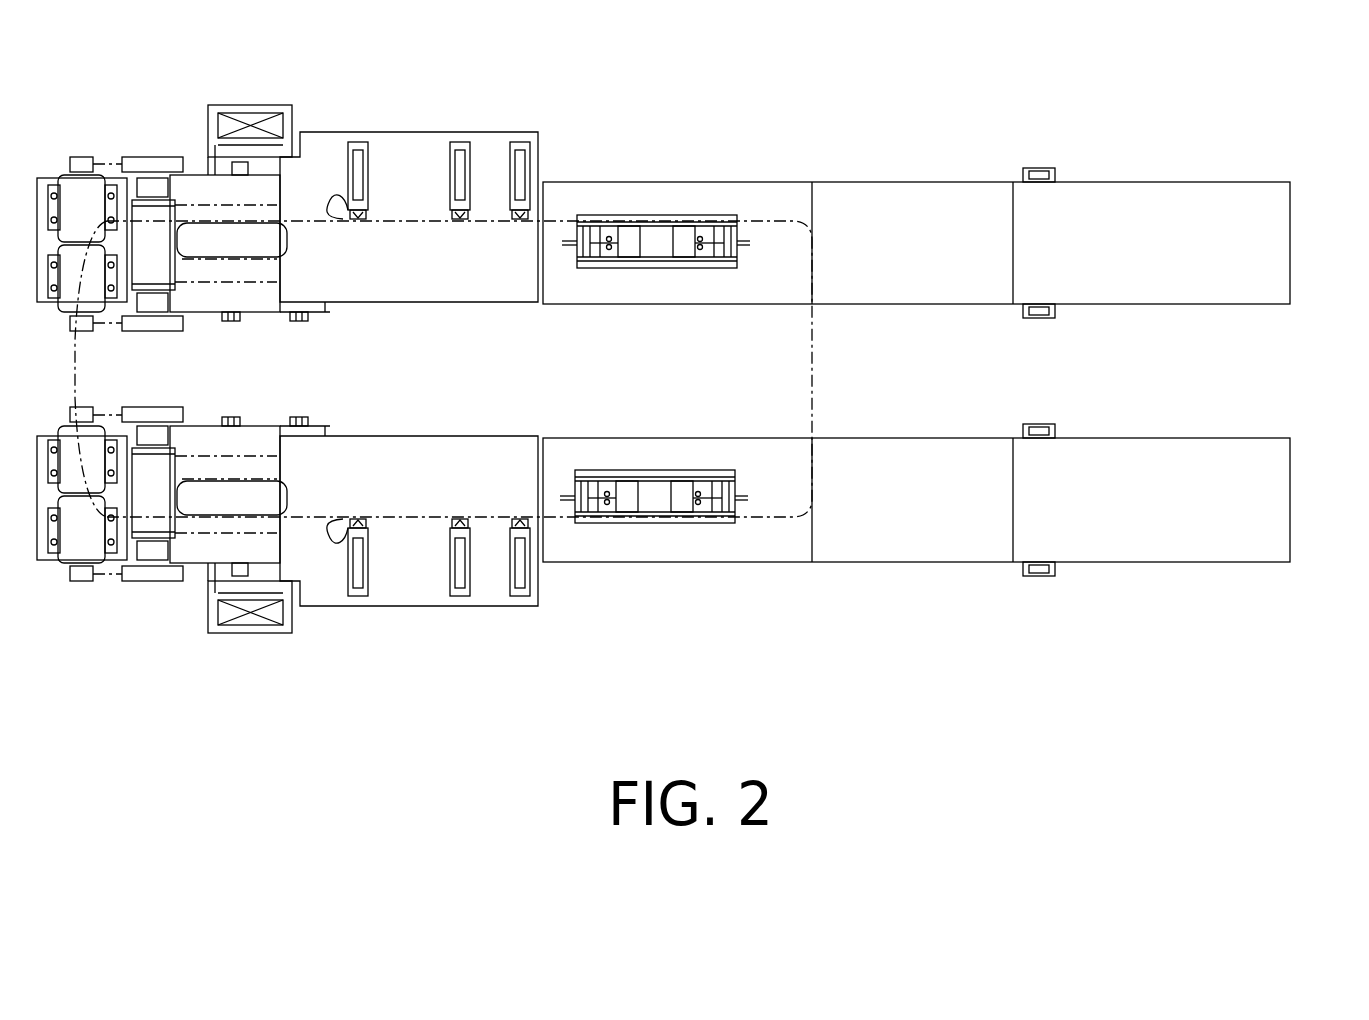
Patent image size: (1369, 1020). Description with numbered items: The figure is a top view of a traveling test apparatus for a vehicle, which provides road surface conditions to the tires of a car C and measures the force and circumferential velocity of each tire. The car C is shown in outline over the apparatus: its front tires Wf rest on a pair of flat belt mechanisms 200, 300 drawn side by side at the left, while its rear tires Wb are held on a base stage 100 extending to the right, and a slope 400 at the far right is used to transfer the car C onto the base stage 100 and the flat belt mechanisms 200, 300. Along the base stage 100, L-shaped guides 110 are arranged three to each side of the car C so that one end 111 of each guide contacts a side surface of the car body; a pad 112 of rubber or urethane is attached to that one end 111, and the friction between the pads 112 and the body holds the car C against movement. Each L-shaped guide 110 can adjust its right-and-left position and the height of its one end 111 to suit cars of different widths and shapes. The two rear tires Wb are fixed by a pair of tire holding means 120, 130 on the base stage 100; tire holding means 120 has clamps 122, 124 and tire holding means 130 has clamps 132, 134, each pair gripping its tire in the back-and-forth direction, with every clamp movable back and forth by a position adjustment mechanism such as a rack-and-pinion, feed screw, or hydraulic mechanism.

The base stage 100 is at (765, 575).
The L-shaped guides 110 is at (515, 145).
The one end of L-shaped guide 111 is at (510, 203).
The pad 112 is at (358, 222).
The tire holding means 120 is at (640, 527).
The clamp 122 is at (632, 490).
The clamp 124 is at (683, 492).
The tire holding means 130 is at (665, 210).
The clamp 132 is at (628, 233).
The clamp 134 is at (685, 233).
The flat belt mechanism 200 is at (193, 580).
The flat belt mechanism 300 is at (182, 145).
The slope 400 is at (950, 416).
The front tires Wf is at (288, 243).
The rear tires Wb is at (595, 262).
The car C is at (778, 218).